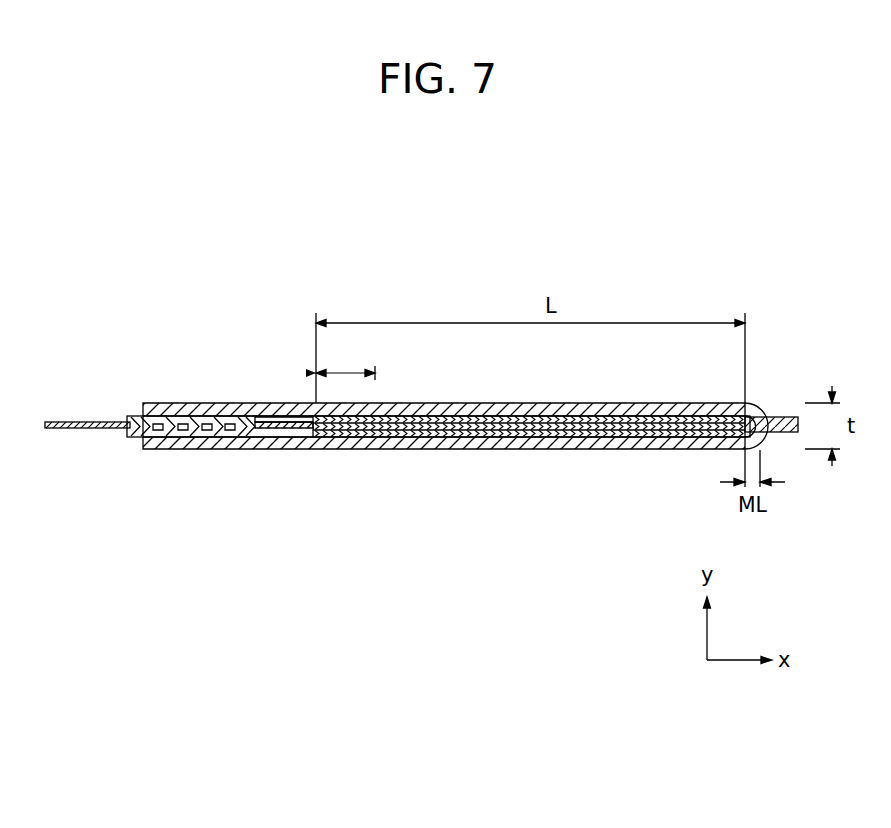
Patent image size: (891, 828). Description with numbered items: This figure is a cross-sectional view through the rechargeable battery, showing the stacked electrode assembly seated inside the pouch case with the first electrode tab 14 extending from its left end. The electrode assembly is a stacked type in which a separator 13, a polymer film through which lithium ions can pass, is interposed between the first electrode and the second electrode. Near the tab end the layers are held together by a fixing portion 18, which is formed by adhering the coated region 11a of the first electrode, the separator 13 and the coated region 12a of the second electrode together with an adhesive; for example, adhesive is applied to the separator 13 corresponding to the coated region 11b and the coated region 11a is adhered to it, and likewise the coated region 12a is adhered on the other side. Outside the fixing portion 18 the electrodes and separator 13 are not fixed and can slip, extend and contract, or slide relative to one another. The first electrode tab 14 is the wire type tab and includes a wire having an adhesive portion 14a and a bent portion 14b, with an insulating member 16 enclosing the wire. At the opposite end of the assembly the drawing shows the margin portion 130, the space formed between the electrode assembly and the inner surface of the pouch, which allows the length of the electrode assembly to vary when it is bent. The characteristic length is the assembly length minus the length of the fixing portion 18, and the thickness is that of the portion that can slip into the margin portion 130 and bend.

The coated region of the first electrode 11a is at (475, 441).
The coated region 11b is at (280, 441).
The coated region of the second electrode 12a is at (410, 441).
The separator 13 is at (345, 441).
The first electrode tab 14 is at (150, 488).
The adhesive portion 14a is at (66, 431).
The bent portion 14b is at (157, 441).
The insulating member 16 is at (210, 472).
The fixing portion 18 is at (345, 358).
The margin portion 130 is at (750, 403).